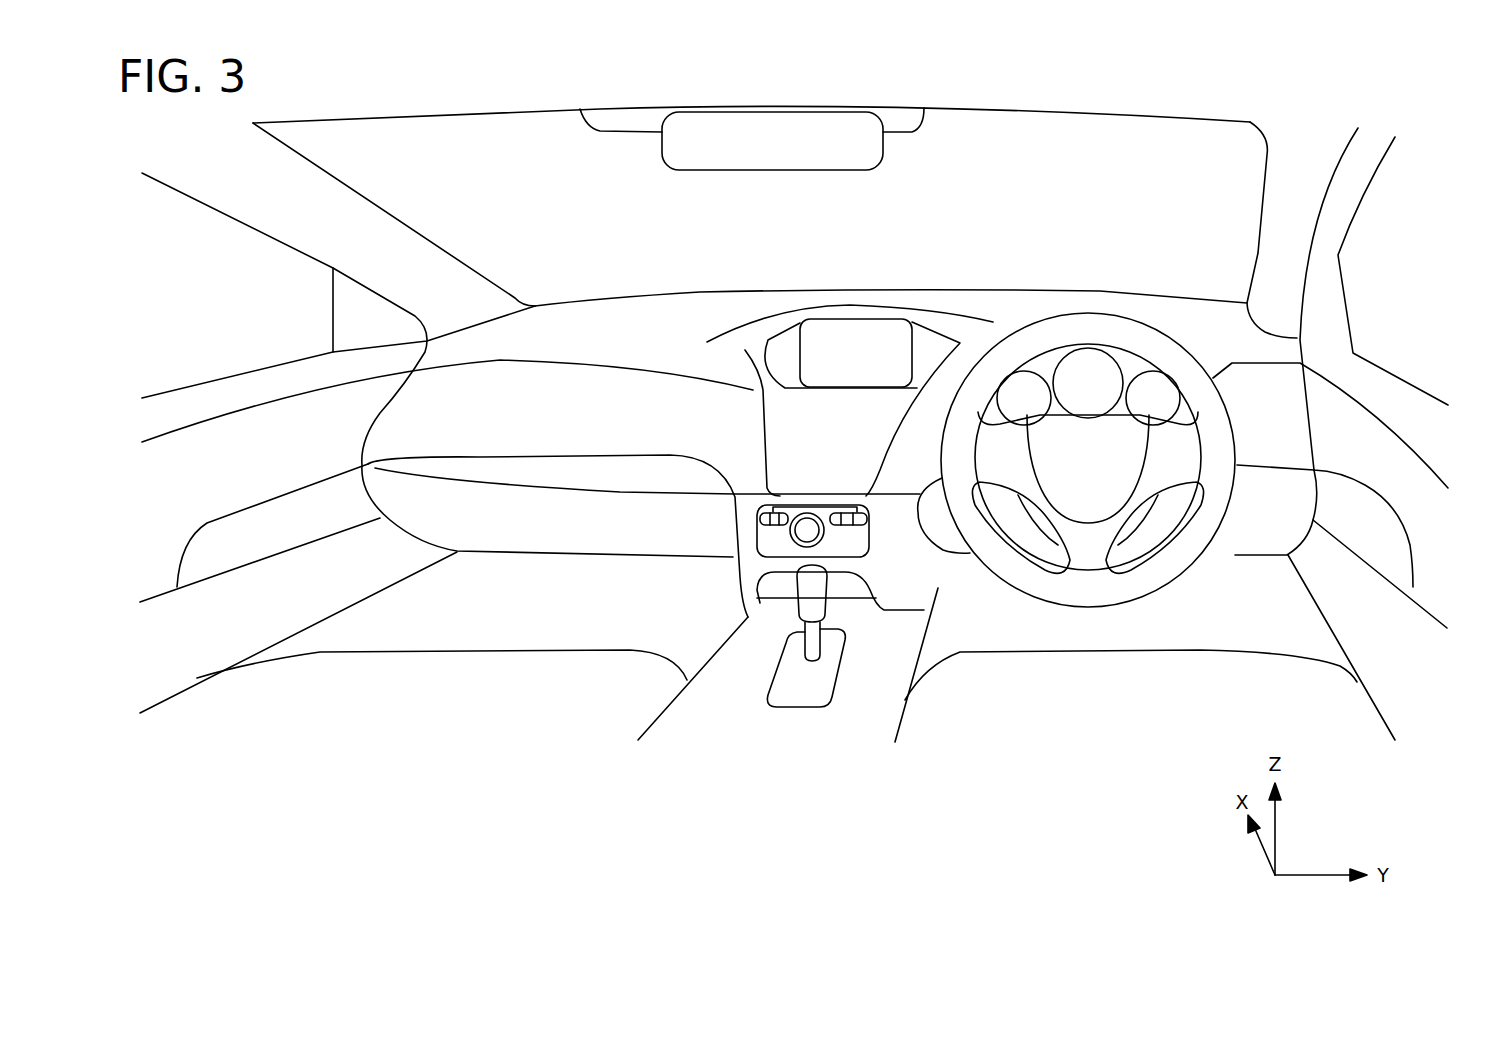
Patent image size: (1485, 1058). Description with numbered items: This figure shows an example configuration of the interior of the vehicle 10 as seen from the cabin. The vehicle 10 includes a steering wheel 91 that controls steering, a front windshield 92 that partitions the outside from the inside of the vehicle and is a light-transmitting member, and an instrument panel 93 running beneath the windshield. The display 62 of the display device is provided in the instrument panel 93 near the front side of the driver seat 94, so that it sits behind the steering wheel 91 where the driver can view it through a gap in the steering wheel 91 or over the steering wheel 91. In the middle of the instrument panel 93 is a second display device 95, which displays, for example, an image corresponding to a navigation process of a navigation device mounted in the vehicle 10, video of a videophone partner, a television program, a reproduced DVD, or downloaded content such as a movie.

The vehicle 10 is at (647, 616).
The display 62 is at (1088, 378).
The steering wheel 91 is at (1088, 433).
The front windshield 92 is at (836, 238).
The instrument panel 93 is at (670, 329).
The driver seat 94 is at (1117, 716).
The second display device 95 is at (837, 371).